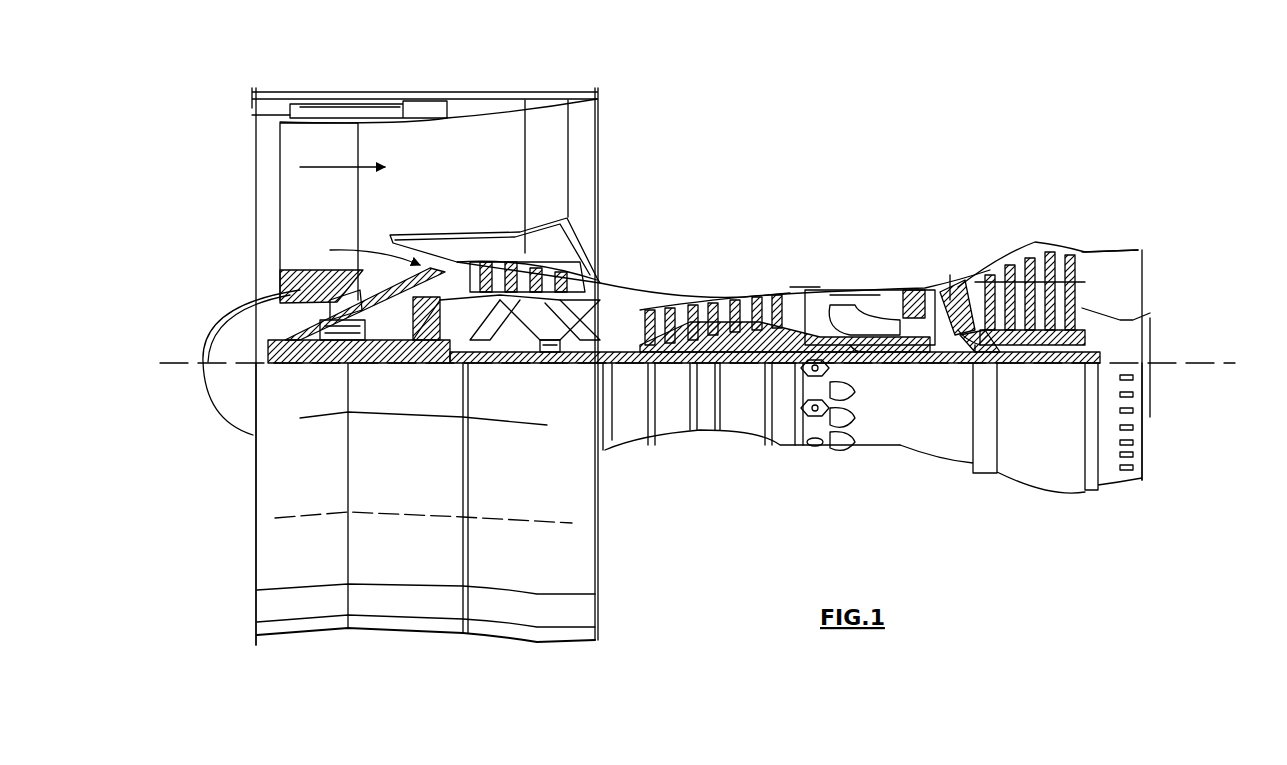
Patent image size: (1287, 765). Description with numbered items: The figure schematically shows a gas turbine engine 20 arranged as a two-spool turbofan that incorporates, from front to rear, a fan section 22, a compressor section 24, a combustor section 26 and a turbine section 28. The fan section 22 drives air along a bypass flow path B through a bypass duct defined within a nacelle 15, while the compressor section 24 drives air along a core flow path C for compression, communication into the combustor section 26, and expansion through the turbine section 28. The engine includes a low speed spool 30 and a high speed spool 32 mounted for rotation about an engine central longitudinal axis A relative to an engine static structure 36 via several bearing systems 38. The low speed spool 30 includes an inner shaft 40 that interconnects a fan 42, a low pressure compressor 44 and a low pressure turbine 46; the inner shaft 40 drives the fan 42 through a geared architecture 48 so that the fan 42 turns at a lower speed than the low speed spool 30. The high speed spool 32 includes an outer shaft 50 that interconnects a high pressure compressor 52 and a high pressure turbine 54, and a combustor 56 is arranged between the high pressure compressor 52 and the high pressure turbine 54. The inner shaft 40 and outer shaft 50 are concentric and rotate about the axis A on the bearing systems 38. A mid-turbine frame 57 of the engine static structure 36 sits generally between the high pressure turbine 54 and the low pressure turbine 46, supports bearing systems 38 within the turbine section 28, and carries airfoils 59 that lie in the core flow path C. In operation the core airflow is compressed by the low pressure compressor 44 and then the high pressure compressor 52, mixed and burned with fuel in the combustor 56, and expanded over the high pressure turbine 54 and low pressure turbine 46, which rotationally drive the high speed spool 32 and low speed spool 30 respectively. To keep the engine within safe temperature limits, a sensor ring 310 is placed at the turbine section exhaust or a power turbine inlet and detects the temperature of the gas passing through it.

The gas turbine engine 20 is at (858, 145).
The fan section 22 is at (358, 86).
The nacelle 15 is at (422, 100).
The fan 42 is at (425, 384).
The low pressure compressor 44 is at (540, 270).
The compressor section 24 is at (715, 286).
The high pressure compressor 52 is at (720, 322).
The combustor section 26 is at (871, 306).
The combustor 56 is at (855, 310).
The high pressure turbine 54 is at (915, 318).
The mid-turbine frame 57 is at (958, 275).
The turbine section 28 is at (1043, 325).
The low pressure turbine 46 is at (1030, 262).
The sensor ring 310 is at (978, 290).
The airfoils 59 is at (985, 318).
The high speed spool 32 is at (785, 345).
The low speed spool 30 is at (742, 370).
The bearing systems 38 is at (558, 355).
The geared architecture 48 is at (433, 345).
The inner shaft 40 is at (612, 440).
The outer shaft 50 is at (860, 355).
The engine static structure 36 is at (782, 450).
The engine central longitudinal axis A is at (1226, 362).
The bypass flow path B is at (333, 166).
The core flow path C is at (364, 251).